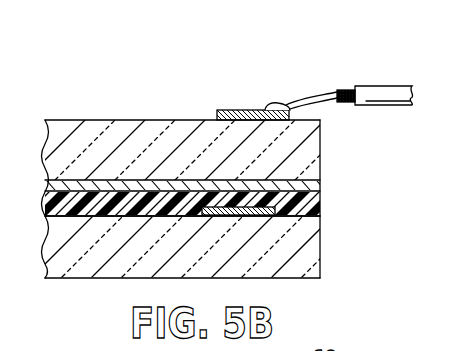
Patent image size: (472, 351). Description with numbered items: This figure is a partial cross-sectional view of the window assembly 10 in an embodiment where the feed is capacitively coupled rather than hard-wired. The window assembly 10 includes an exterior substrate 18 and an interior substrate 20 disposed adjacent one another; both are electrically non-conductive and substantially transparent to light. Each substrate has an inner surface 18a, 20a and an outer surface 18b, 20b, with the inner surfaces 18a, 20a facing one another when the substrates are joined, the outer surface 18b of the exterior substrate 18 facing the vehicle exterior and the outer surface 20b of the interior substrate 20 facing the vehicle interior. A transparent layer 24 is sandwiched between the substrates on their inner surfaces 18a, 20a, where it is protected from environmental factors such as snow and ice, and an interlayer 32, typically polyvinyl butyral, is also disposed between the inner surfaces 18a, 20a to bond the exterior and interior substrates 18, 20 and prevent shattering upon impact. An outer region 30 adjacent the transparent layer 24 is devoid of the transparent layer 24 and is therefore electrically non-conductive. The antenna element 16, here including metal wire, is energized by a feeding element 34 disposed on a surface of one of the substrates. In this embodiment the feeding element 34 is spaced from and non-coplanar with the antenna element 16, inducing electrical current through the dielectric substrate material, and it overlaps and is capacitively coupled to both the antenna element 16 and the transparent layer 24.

The window assembly 10 is at (280, 60).
The interior substrate 20 is at (98, 133).
The inner surface of the interior substrate 20a is at (304, 182).
The outer surface of the interior substrate 20b is at (298, 119).
The transparent layer 24 is at (157, 182).
The outer region 30 is at (252, 183).
The feeding element 34 is at (384, 96).
The exterior substrate 18 is at (82, 271).
The inner surface of the exterior substrate 18a is at (318, 211).
The outer surface of the exterior substrate 18b is at (290, 280).
The antenna element 16 is at (244, 214).
The interlayer 32 is at (106, 213).